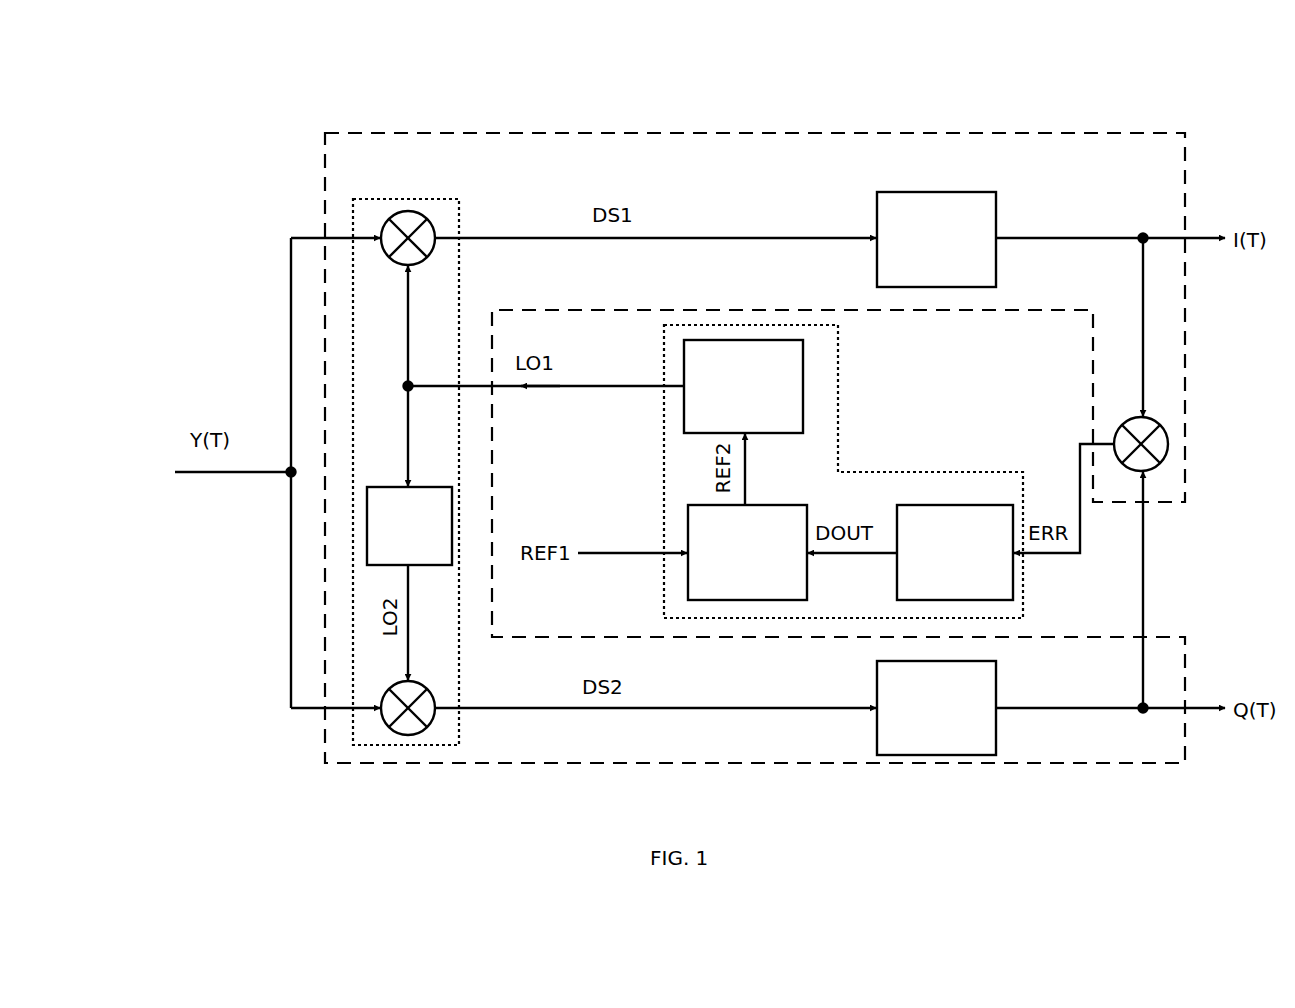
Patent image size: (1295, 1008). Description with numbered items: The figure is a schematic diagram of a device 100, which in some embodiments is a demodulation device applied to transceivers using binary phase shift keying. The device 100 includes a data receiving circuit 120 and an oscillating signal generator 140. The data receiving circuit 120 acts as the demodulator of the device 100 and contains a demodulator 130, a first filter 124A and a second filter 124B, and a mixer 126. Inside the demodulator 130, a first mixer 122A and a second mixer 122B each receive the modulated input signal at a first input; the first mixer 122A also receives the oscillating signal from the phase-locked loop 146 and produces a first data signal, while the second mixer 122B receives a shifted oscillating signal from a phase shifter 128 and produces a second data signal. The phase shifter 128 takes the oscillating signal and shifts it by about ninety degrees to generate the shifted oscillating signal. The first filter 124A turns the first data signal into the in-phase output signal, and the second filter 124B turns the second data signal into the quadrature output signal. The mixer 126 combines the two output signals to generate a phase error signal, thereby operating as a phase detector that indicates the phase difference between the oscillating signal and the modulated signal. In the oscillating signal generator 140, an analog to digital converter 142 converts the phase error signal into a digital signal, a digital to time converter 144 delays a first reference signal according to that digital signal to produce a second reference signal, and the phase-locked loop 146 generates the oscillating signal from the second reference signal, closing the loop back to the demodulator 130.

The device 100 is at (152, 83).
The data receiving circuit 120 is at (325, 178).
The mixer 122A is at (432, 226).
The mixer 122B is at (432, 698).
The filter 124A is at (910, 251).
The filter 124B is at (910, 721).
The mixer 126 is at (1165, 437).
The phase shifter 128 is at (392, 537).
The demodulator 130 is at (380, 745).
The oscillating signal generator 140 is at (838, 388).
The analog to digital converter 142 is at (937, 565).
The digital to time converter 144 is at (730, 565).
The phase-locked loop 146 is at (726, 399).